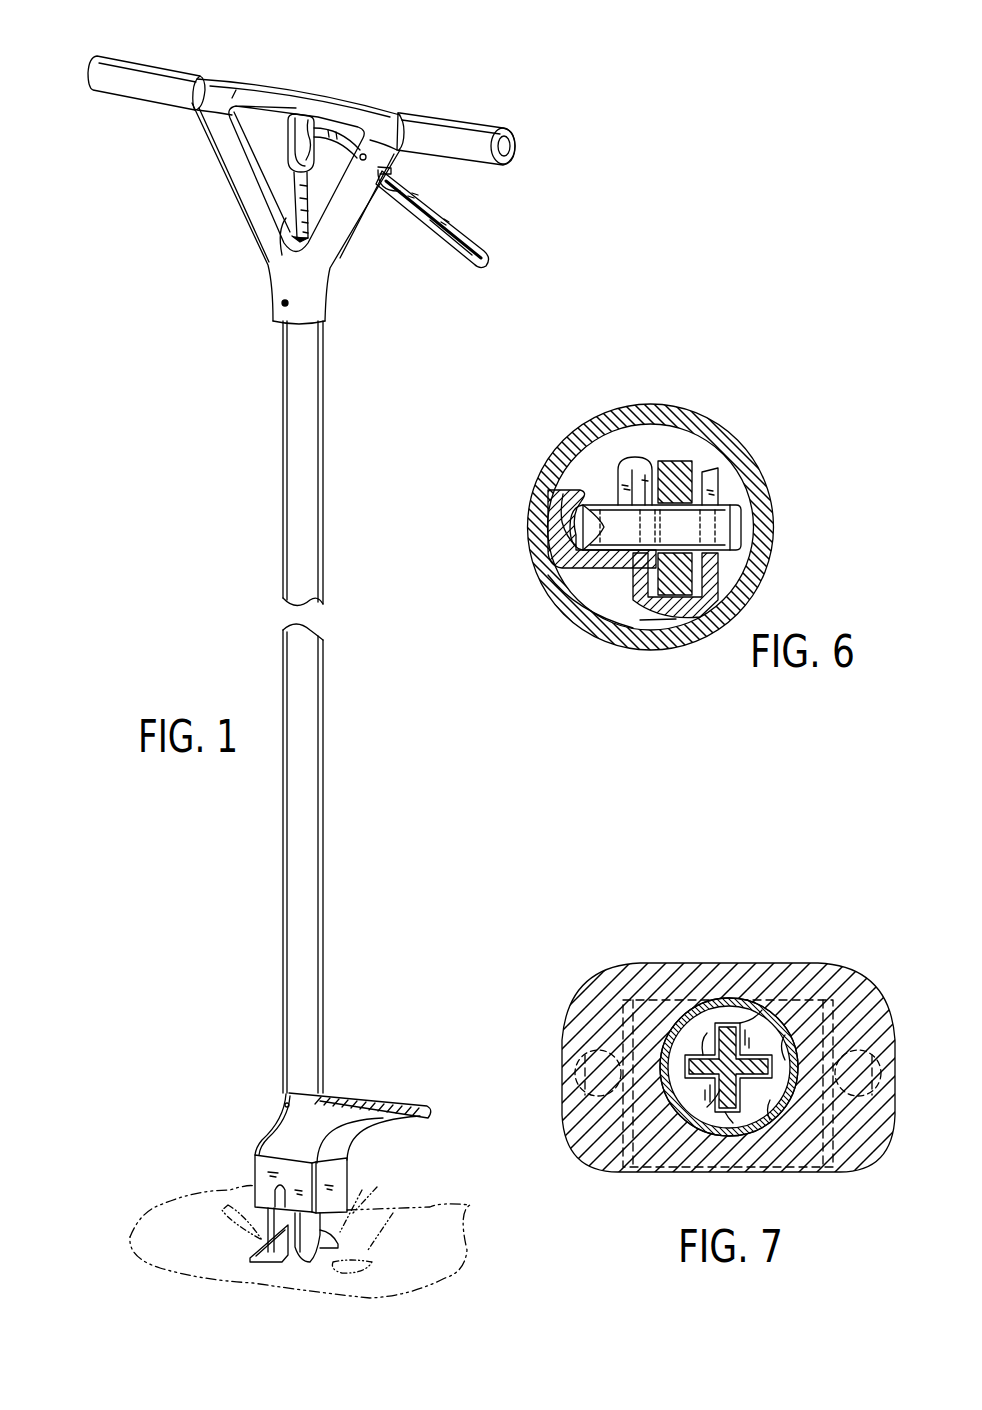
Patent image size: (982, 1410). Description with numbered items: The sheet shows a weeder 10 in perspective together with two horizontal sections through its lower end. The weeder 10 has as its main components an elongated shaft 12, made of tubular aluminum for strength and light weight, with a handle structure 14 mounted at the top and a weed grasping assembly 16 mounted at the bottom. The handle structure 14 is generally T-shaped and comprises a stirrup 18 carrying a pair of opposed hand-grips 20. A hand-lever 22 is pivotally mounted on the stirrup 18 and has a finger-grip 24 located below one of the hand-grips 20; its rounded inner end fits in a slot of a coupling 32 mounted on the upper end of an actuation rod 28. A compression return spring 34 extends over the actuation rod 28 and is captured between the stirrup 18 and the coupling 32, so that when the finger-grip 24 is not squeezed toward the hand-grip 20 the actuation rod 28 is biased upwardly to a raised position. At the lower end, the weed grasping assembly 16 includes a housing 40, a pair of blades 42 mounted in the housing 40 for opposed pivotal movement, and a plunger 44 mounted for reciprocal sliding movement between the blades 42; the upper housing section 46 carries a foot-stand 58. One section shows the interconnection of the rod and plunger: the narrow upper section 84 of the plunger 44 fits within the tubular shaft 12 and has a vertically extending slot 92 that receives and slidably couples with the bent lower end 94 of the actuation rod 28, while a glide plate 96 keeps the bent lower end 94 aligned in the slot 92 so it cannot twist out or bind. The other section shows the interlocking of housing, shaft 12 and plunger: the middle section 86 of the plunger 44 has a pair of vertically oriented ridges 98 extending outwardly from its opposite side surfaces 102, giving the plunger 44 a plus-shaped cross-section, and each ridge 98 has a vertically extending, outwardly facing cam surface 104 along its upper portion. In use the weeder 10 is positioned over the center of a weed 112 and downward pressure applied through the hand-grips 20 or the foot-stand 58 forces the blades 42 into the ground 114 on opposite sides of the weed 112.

In FIG. 1, the weeder 10 is at (240, 514).
In FIG. 1, the elongated shaft 12 is at (326, 517).
In FIG. 6, the elongated shaft 12 is at (563, 610).
In FIG. 7, the elongated shaft 12 is at (725, 1120).
In FIG. 1, the handle structure 14 is at (269, 84).
In FIG. 1, the weed grasping assembly 16 is at (264, 1123).
In FIG. 1, the stirrup 18 is at (262, 212).
In FIG. 1, the hand-grips 20 is at (152, 61).
In FIG. 1, the hand-lever 22 is at (451, 211).
In FIG. 1, the finger-grip 24 is at (437, 233).
In FIG. 6, the actuation rod 28 is at (590, 503).
In FIG. 1, the coupling 32 is at (291, 115).
In FIG. 1, the return spring 34 is at (293, 200).
In FIG. 1, the housing 40 is at (255, 1150).
In FIG. 1, the blades 42 is at (309, 1263).
In FIG. 1, the plunger 44 is at (262, 1243).
In FIG. 7, the upper housing section 46 is at (720, 961).
In FIG. 1, the foot-stand 58 is at (385, 1096).
In FIG. 6, the upper section 84 is at (706, 623).
In FIG. 7, the middle section 86 is at (678, 1040).
In FIG. 6, the slot 92 is at (686, 490).
In FIG. 6, the bent lower end 94 is at (742, 523).
In FIG. 6, the glide plate 96 is at (657, 619).
In FIG. 7, the ridges 98 is at (703, 1033).
In FIG. 7, the side surfaces 102 is at (785, 1035).
In FIG. 7, the cam surface 104 is at (740, 1017).
In FIG. 1, the weed 112 is at (378, 1187).
In FIG. 1, the ground 114 is at (470, 1208).